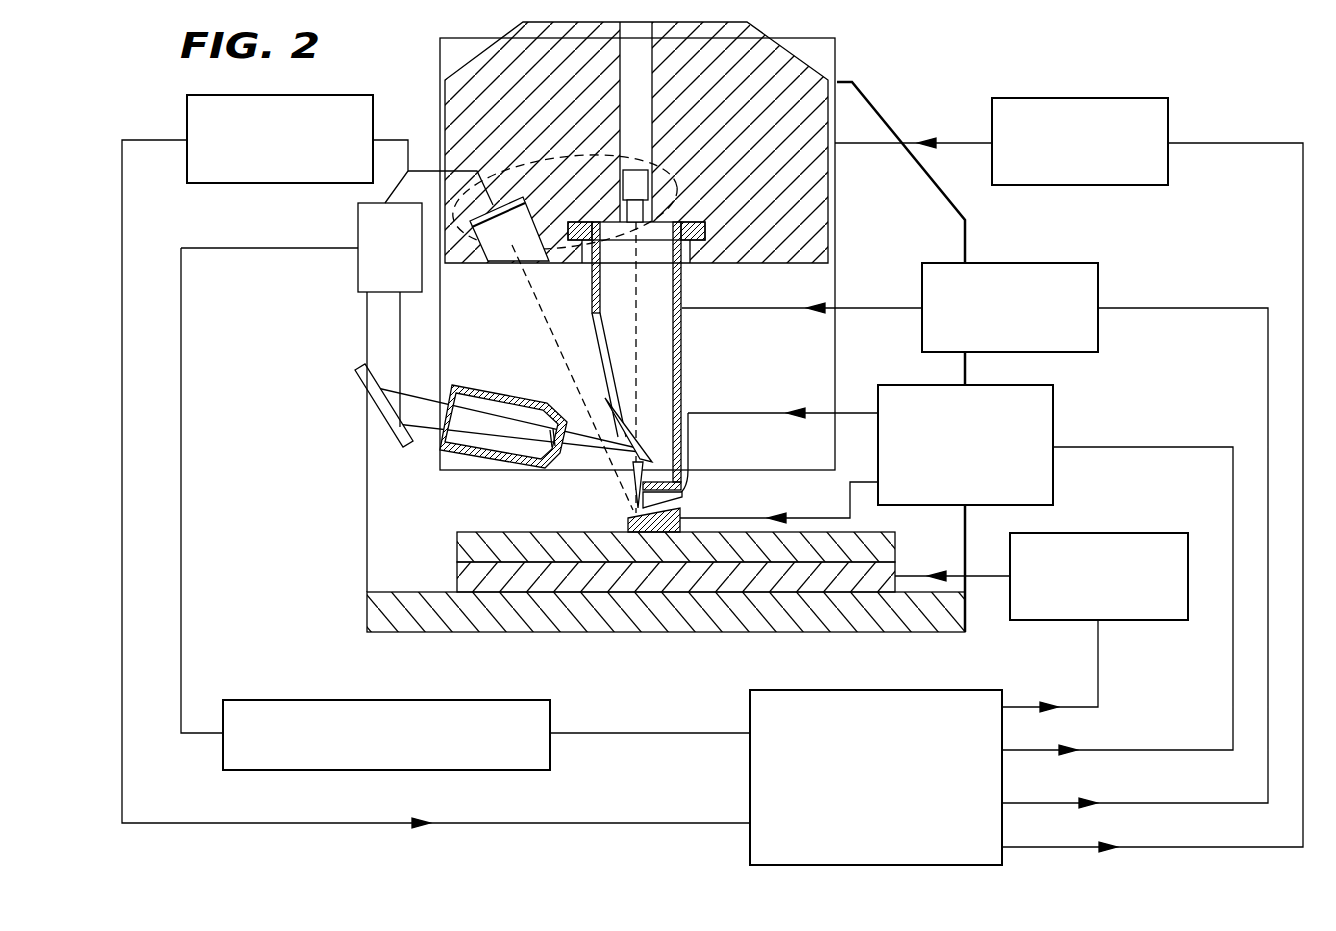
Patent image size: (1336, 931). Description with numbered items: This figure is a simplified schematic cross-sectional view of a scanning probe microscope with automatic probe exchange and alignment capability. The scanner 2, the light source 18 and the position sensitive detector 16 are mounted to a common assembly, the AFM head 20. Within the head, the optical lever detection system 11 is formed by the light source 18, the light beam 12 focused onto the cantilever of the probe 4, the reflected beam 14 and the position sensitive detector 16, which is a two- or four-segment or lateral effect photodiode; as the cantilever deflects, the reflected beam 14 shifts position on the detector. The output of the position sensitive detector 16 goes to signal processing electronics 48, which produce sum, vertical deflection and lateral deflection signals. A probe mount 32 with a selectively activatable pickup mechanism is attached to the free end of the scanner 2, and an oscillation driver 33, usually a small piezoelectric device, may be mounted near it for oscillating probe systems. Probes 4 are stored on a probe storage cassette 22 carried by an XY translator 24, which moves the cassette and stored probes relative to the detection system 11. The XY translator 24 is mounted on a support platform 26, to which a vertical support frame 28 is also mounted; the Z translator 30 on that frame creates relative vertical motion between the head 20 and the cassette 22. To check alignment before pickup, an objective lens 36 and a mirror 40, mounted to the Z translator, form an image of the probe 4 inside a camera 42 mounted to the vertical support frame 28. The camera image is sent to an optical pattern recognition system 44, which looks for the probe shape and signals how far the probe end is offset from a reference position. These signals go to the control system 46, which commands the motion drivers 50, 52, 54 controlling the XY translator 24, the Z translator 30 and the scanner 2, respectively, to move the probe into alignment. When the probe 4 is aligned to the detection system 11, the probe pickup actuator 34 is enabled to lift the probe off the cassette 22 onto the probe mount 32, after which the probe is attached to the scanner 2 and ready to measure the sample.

The scanner 2 is at (682, 388).
The probe 4 is at (680, 510).
The detection system 11 is at (545, 165).
The light beam 12 is at (637, 352).
The reflected beam 14 is at (557, 342).
The position sensitive detector 16 is at (498, 263).
The light source 18 is at (622, 185).
The AFM head 20 is at (752, 30).
The probe storage cassette 22 is at (555, 537).
The XY translator 24 is at (897, 548).
The support platform 26 is at (367, 610).
The vertical support frame 28 is at (367, 522).
The Z translator 30 is at (837, 53).
The probe mount 32 is at (633, 493).
The oscillation driver 33 is at (690, 487).
The probe pickup actuator 34 is at (1053, 398).
The objective lens 36 is at (470, 385).
The mirror 40 is at (392, 428).
The camera 42 is at (400, 258).
The optical pattern recognition system 44 is at (250, 705).
The control system 46 is at (755, 705).
The signal processing electronics 48 is at (187, 113).
The motion driver 50 is at (1098, 275).
The motion driver 52 is at (1160, 535).
The motion driver 54 is at (1010, 98).